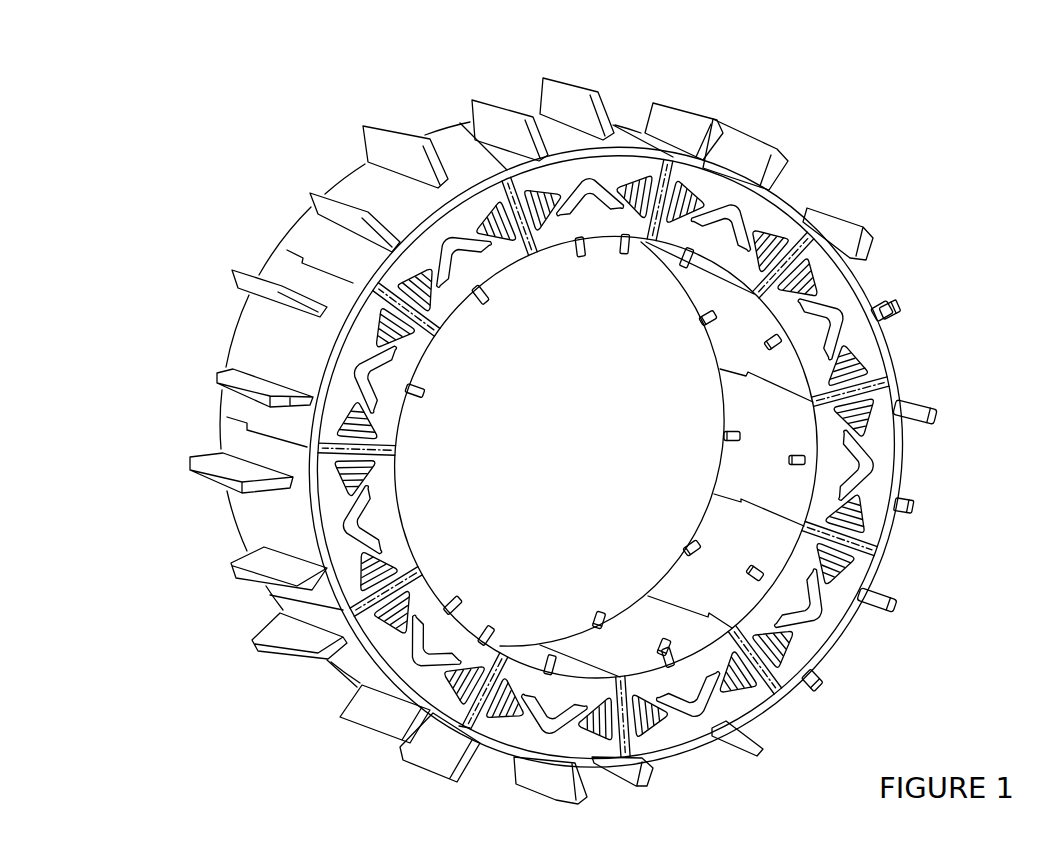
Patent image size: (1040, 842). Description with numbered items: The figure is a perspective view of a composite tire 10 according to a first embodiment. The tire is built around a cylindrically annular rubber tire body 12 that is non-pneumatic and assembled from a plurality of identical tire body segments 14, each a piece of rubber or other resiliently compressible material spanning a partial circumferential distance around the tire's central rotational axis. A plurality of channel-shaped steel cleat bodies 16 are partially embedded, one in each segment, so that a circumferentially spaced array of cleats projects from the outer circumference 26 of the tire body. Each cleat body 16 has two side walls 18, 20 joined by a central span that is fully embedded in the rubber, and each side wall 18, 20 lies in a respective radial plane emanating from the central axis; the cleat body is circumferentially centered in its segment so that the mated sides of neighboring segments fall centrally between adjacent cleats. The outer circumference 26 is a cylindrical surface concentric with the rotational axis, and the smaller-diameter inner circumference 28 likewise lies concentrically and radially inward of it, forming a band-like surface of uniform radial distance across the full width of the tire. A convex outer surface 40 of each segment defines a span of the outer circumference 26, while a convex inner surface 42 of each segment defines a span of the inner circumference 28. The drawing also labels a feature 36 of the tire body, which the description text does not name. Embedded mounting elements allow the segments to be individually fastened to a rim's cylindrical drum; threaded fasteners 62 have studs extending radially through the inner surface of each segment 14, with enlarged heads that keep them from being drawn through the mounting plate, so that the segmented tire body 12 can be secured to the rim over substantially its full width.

The composite tire 10 is at (922, 140).
The tire body 12 is at (656, 459).
The tire body segment 14 is at (453, 104).
The cleat body 16 is at (561, 64).
The side wall 18 is at (657, 109).
The side wall 20 is at (763, 140).
The outer circumference 26 is at (280, 326).
The inner circumference 28 is at (721, 526).
The annular face 36 is at (853, 299).
The outer surface 40 is at (262, 351).
The inner surface 42 is at (686, 573).
The threaded fastener 62 is at (650, 629).